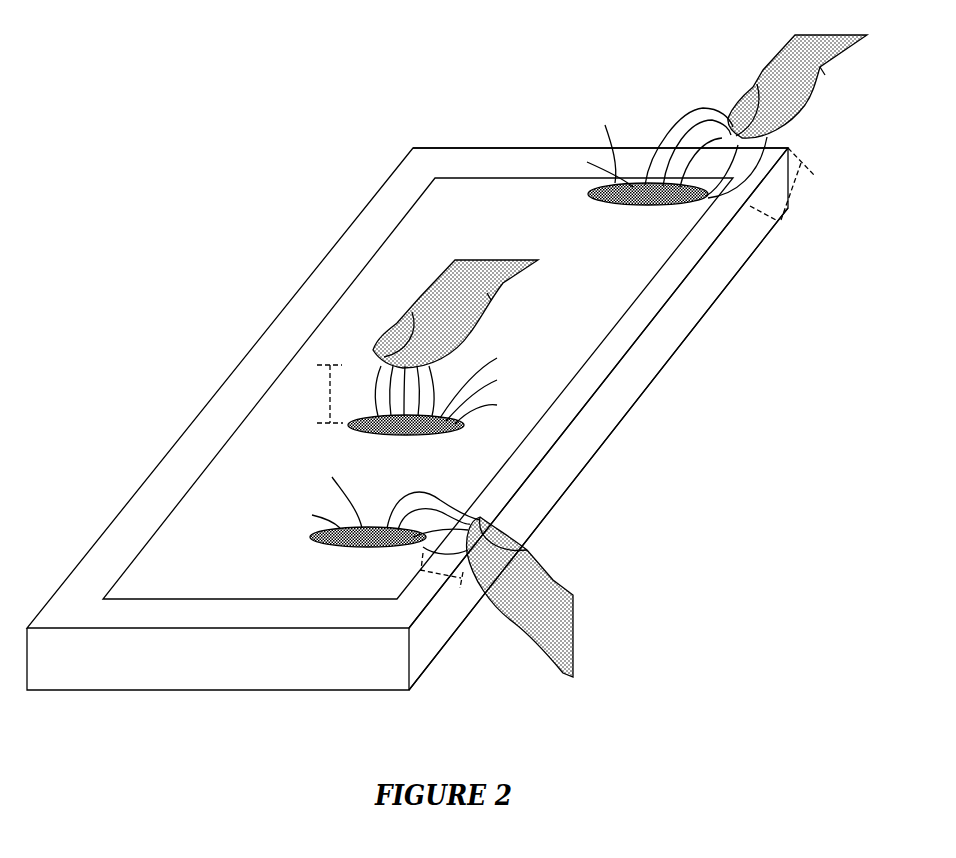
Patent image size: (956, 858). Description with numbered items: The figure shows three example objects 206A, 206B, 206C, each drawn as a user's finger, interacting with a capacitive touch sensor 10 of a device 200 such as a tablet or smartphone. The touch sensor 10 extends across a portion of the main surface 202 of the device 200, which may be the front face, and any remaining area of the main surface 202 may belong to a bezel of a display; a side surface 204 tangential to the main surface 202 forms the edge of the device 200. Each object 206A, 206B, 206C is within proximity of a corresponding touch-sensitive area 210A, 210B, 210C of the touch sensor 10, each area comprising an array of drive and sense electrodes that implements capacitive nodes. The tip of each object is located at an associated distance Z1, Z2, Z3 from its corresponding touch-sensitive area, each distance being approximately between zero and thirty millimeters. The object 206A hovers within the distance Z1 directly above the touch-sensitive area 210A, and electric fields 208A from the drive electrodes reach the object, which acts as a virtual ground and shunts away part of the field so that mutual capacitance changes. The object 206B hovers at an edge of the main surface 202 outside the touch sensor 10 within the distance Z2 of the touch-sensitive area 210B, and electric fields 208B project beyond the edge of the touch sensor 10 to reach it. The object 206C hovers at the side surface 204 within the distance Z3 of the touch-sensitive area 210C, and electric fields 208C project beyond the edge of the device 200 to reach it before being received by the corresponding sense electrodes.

The touch sensor 10 is at (350, 310).
The device 200 is at (482, 146).
The main surface 202 is at (395, 185).
The side surface 204 is at (648, 360).
The object 206A is at (455, 314).
The object 206B is at (797, 86).
The object 206C is at (520, 597).
The electric fields 208A is at (439, 360).
The electric fields 208B is at (702, 105).
The electric fields 208C is at (414, 493).
The touch-sensitive area 210A is at (405, 433).
The touch-sensitive area 210B is at (648, 204).
The touch-sensitive area 210C is at (375, 548).
The distance Z1 is at (322, 394).
The distance Z2 is at (782, 184).
The distance Z3 is at (442, 581).